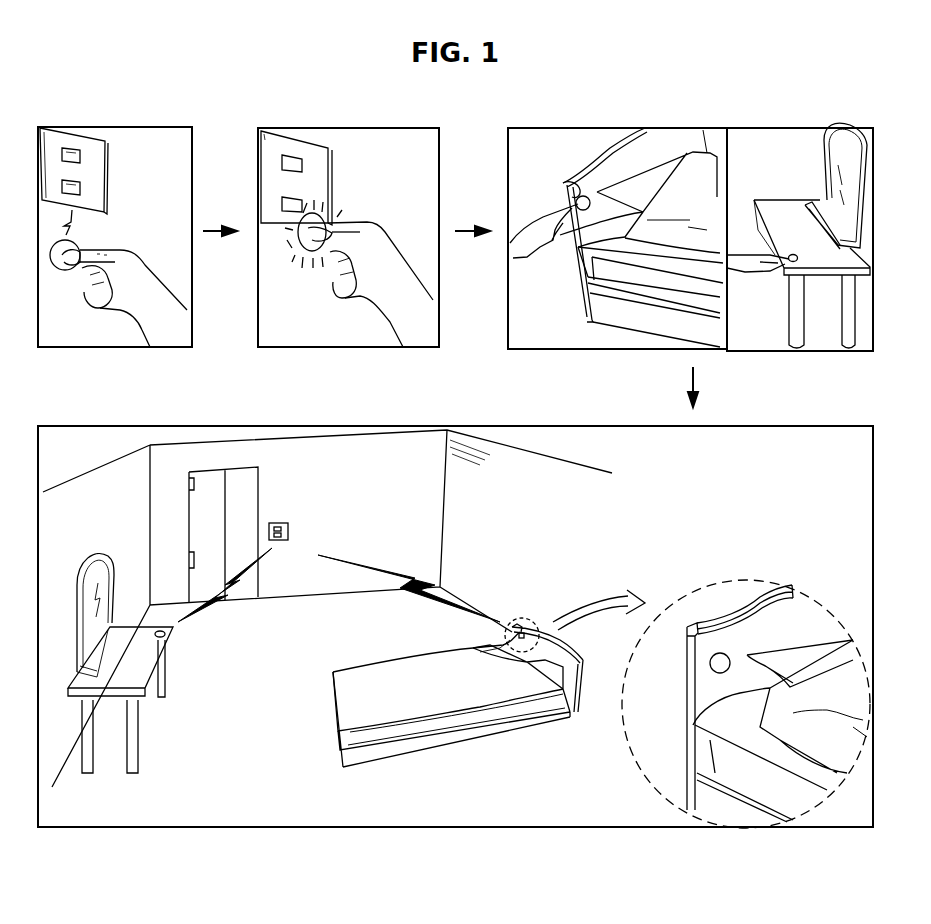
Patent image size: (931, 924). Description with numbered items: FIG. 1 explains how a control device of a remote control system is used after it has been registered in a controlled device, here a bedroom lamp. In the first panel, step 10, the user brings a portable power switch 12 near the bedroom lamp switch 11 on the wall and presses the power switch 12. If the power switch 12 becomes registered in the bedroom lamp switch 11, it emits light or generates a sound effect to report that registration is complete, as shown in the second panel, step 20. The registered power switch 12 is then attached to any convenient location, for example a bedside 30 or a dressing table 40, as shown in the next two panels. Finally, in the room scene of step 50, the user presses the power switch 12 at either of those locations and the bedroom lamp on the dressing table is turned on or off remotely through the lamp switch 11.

The step of bringing power switch near lamp switch 10 is at (130, 124).
The bedroom lamp switch 11 is at (107, 165).
The power switch 12 is at (88, 244).
The registration completion step 20 is at (378, 126).
The bedside 30 is at (593, 127).
The dressing table 40 is at (783, 127).
The remote control step 50 is at (390, 828).